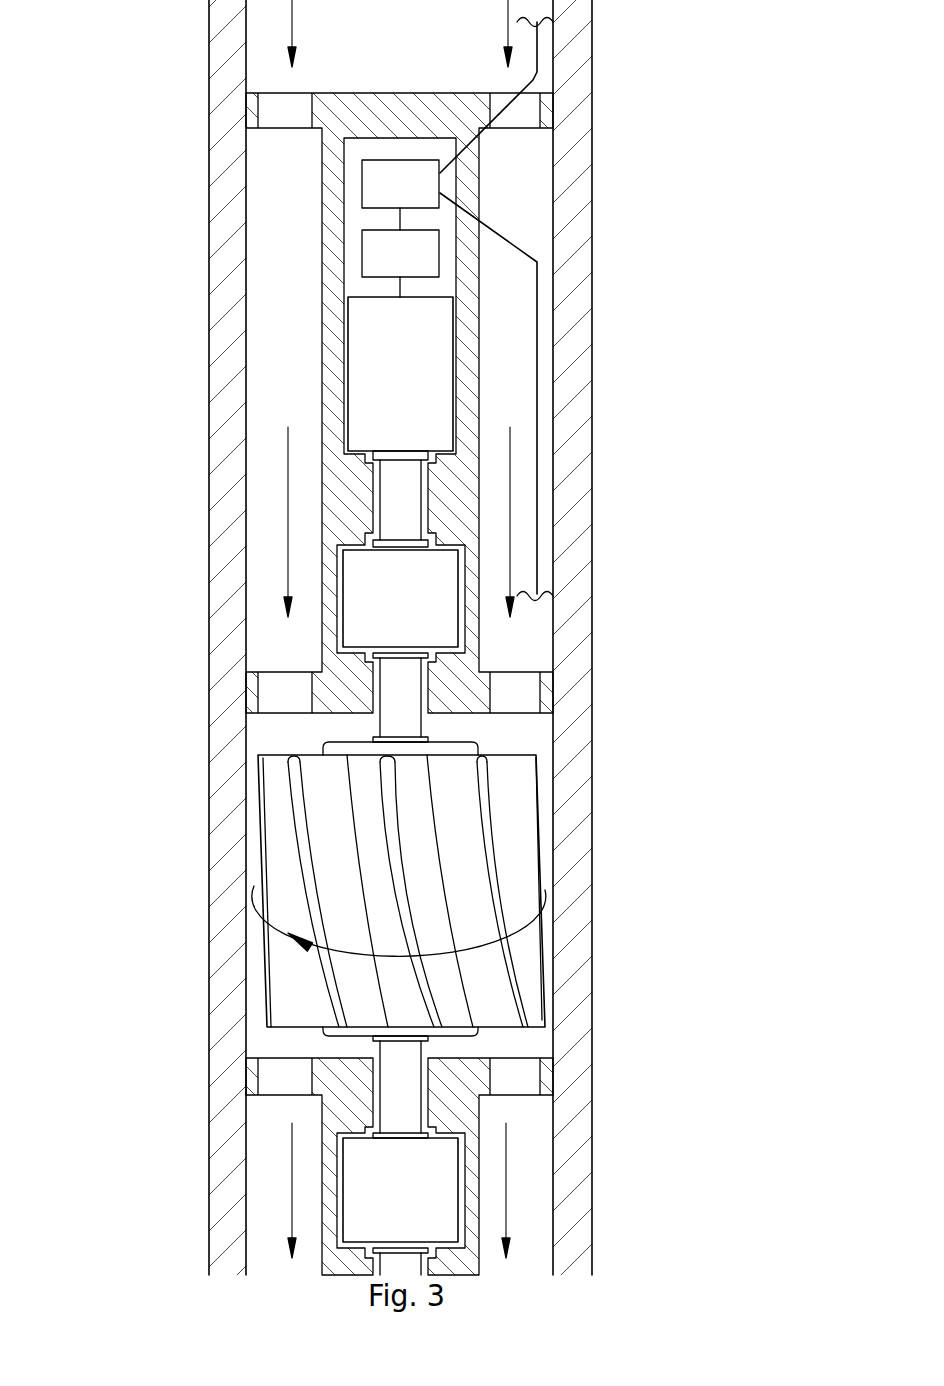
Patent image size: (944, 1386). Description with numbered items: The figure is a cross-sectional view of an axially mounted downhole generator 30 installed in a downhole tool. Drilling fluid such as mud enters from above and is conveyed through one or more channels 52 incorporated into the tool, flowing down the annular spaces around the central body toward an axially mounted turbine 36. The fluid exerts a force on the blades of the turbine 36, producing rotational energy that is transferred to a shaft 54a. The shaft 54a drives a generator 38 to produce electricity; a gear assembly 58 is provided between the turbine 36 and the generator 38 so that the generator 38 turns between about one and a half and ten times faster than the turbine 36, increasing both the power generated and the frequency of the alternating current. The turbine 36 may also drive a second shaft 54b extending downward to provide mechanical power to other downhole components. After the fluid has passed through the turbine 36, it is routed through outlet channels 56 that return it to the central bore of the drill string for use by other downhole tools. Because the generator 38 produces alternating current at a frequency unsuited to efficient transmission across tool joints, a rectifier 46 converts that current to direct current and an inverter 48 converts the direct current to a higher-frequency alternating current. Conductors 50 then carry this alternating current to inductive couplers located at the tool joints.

The downhole generator 30 is at (605, 295).
The axially mounted turbine 36 is at (332, 875).
The generator 38 is at (398, 390).
The rectifier 46 is at (385, 263).
The inverter 48 is at (385, 186).
The conductors 50 is at (540, 47).
The channels 52 is at (275, 232).
The shaft 54a is at (397, 722).
The second shaft 54b is at (397, 1052).
The outlet channels 56 is at (278, 1135).
The gear assembly 58 is at (378, 617).